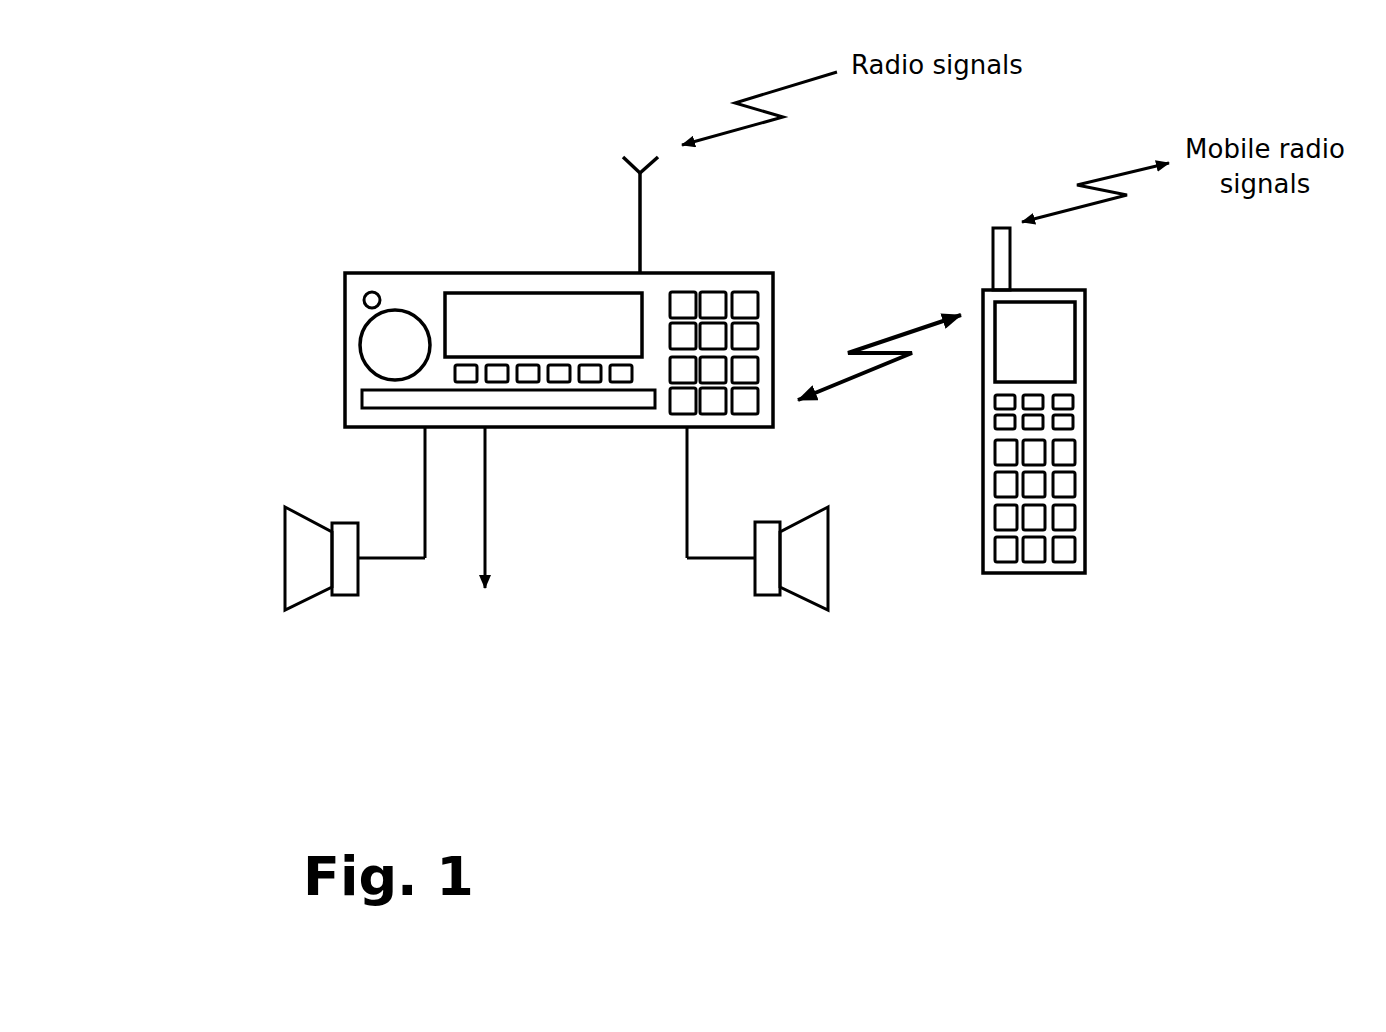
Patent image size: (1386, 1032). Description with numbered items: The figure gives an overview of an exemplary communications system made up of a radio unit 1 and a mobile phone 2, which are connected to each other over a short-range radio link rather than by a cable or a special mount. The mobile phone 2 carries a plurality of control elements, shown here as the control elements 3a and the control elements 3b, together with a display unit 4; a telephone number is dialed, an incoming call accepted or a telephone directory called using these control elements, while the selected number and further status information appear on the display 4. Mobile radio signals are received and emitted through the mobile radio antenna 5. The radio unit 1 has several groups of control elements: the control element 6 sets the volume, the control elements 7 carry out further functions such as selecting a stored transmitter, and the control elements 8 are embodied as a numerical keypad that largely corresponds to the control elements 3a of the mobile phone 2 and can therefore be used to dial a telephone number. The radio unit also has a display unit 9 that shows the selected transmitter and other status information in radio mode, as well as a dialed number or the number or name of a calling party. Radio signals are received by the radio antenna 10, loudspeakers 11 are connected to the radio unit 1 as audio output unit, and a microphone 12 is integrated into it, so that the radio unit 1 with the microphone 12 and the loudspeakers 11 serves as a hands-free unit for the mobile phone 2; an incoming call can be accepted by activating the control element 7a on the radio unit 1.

The radio unit 1 is at (402, 268).
The mobile phone 2 is at (1007, 582).
The control elements 3a is at (1072, 517).
The function keys 3b is at (1075, 402).
The display unit 4 is at (1040, 340).
The mobile radio antenna 5 is at (997, 257).
The control element 6 is at (397, 342).
The control elements 7 is at (446, 376).
The control element 7a is at (622, 380).
The control elements 8 is at (710, 268).
The display unit 9 is at (503, 317).
The radio antenna 10 is at (640, 195).
The loudspeakers 11 is at (308, 573).
The microphone 12 is at (364, 300).